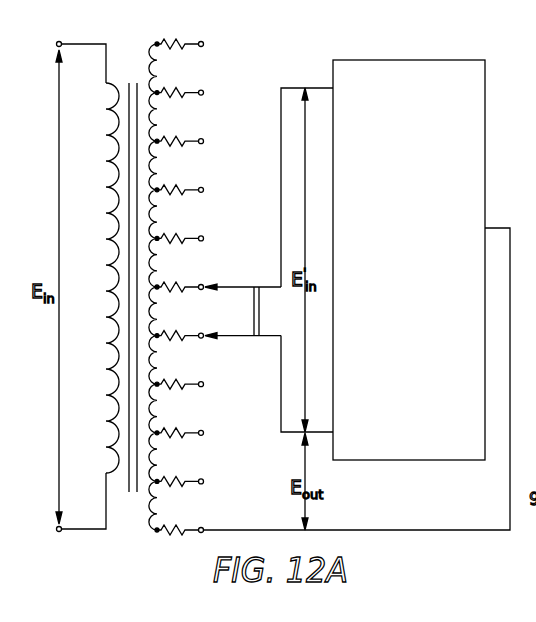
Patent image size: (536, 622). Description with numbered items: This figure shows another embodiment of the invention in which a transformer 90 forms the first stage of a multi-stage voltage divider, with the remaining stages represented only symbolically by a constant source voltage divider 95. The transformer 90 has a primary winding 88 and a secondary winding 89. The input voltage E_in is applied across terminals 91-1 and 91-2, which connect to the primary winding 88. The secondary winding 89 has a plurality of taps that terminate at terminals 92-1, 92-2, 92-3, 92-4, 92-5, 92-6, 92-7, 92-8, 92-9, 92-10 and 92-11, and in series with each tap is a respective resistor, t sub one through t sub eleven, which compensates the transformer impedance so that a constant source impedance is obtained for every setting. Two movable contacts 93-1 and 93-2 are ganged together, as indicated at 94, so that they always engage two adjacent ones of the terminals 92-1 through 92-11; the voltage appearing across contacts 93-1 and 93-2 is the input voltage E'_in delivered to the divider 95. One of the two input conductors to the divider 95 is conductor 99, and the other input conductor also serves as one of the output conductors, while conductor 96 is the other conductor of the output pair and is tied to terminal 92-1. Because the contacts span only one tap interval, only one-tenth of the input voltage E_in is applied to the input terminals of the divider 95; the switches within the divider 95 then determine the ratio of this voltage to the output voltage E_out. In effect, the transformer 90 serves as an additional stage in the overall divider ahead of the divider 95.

The primary winding 88 is at (106, 189).
The secondary winding 89 is at (150, 505).
The transformer 90 is at (126, 74).
The input terminal 91-1 is at (63, 33).
The input terminal 91-2 is at (59, 532).
The tap terminal 92-1 is at (203, 528).
The tap terminal 92-2 is at (210, 474).
The tap terminal 92-3 is at (210, 426).
The tap terminal 92-4 is at (210, 377).
The tap terminal 92-5 is at (200, 333).
The tap terminal 92-6 is at (203, 284).
The tap terminal 92-7 is at (204, 236).
The tap terminal 92-8 is at (204, 188).
The tap terminal 92-9 is at (204, 140).
The tap terminal 92-10 is at (204, 91).
The tap terminal 92-11 is at (210, 36).
The movable contact 93-1 is at (243, 337).
The movable contact 93-2 is at (243, 298).
The ganged switch 94 is at (260, 323).
The constant source voltage divider 95 is at (416, 60).
The output conductor 96 is at (512, 226).
The input conductor 99 is at (280, 125).